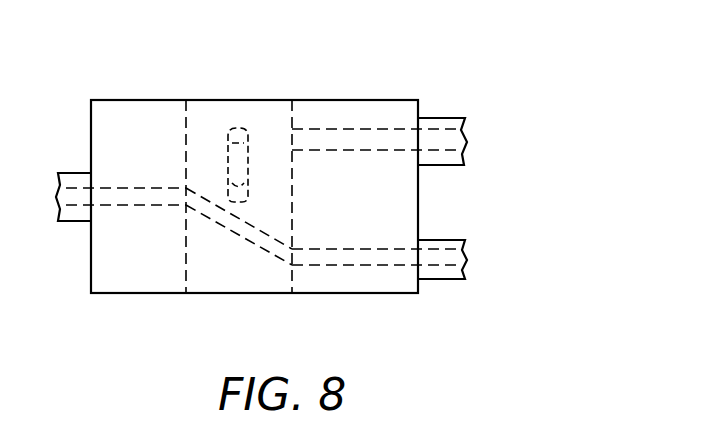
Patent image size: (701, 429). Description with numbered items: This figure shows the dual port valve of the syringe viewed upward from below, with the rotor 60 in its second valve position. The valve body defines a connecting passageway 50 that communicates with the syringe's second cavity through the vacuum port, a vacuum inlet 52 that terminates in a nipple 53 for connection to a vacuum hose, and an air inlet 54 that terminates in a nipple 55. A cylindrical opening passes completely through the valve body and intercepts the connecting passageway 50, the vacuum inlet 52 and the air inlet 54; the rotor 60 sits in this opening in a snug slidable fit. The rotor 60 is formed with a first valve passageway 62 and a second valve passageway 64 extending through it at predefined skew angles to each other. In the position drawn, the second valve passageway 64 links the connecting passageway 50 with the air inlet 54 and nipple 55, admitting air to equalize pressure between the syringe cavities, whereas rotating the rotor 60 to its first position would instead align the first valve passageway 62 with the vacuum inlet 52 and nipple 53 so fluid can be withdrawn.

The connecting passageway 50 is at (73, 178).
The vacuum inlet 52 is at (375, 262).
The nipple 53 is at (453, 280).
The air inlet 54 is at (355, 135).
The nipple 55 is at (447, 118).
The rotor 60 is at (207, 303).
The first valve passageway 62 is at (257, 243).
The second valve passageway 64 is at (250, 150).